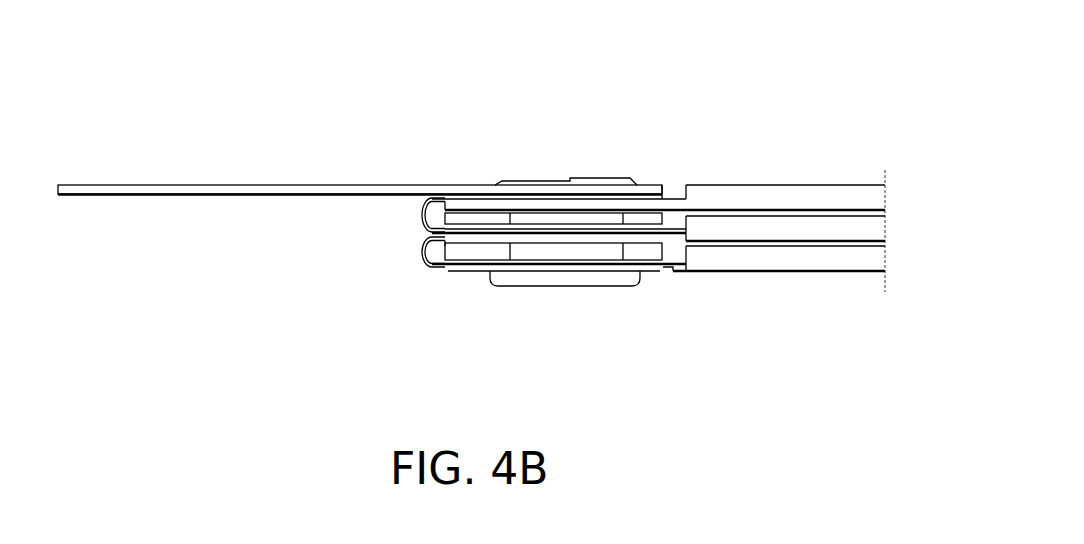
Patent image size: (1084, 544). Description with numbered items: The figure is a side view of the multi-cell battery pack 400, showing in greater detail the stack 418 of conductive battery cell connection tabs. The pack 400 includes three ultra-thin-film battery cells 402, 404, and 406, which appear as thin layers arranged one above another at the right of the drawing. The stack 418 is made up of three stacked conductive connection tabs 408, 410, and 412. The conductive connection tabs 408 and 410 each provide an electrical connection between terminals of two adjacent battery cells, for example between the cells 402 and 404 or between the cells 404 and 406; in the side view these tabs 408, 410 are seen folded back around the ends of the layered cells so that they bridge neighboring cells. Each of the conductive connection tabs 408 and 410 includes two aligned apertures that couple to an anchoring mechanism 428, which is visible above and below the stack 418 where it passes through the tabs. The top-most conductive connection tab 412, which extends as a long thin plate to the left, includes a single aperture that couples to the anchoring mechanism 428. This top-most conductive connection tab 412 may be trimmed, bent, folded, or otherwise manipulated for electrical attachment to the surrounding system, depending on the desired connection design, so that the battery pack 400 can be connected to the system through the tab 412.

The multi-cell battery pack 400 is at (503, 173).
The ultra-thin-film battery cell 402 is at (843, 272).
The ultra-thin-film battery cell 404 is at (845, 243).
The ultra-thin-film battery cell 406 is at (843, 206).
The conductive connection tab 408 is at (383, 252).
The conductive connection tab 410 is at (383, 215).
The top-most conductive connection tab 412 is at (360, 173).
The stack of conductive battery cell connection tabs 418 is at (383, 282).
The anchoring mechanism 428 is at (554, 215).